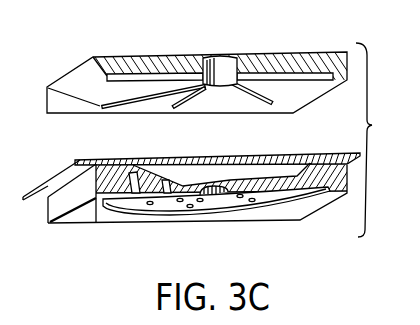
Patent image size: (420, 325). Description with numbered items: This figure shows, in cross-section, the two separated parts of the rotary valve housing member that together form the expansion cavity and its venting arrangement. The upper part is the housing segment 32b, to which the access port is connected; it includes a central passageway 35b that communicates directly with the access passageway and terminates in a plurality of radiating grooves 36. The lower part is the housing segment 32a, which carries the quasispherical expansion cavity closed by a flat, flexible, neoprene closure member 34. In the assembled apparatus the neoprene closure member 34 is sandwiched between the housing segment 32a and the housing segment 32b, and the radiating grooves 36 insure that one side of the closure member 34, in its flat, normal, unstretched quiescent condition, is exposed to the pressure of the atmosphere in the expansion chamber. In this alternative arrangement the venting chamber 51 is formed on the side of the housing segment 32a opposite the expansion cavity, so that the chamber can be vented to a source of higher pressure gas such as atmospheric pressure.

The housing segment 32a is at (108, 197).
The housing segment 32b is at (143, 58).
The flat, flexible, neoprene closure member 34 is at (288, 157).
The central passageway 35b is at (235, 63).
The radiating grooves 36 is at (268, 93).
The venting chamber 51 is at (221, 202).